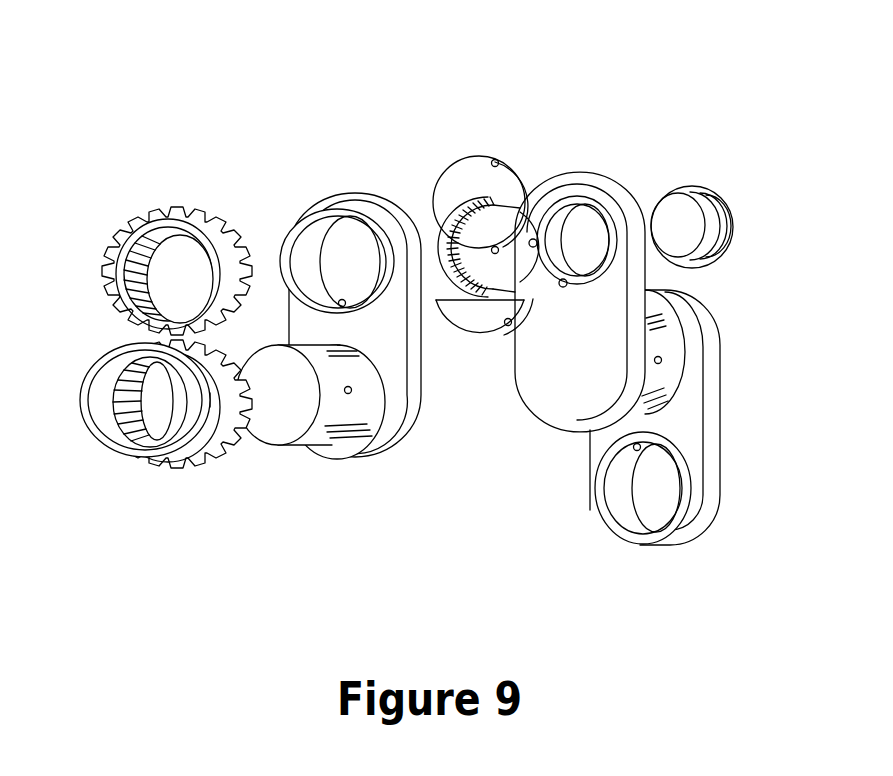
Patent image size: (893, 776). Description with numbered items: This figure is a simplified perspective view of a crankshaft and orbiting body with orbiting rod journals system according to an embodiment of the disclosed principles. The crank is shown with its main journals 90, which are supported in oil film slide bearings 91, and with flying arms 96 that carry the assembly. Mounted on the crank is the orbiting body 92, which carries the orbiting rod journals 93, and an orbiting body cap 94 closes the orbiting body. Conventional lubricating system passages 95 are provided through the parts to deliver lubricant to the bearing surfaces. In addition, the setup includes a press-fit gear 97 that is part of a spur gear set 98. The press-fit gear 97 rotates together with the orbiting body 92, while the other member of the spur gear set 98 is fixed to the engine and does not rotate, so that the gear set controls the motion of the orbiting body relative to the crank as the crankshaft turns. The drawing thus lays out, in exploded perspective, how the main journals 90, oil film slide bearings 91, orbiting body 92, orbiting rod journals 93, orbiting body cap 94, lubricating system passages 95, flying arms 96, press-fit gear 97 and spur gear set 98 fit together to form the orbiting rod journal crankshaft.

The main journals 90 is at (663, 383).
The oil film slide bearings 91 is at (640, 392).
The orbiting body 92 is at (452, 262).
The orbiting rod journals 93 is at (483, 317).
The orbiting body cap 94 is at (733, 237).
The lubricating system passages 95 is at (658, 356).
The flying arms 96 is at (330, 440).
The press-fit gear 97 is at (535, 237).
The spur gear set 98 is at (281, 354).